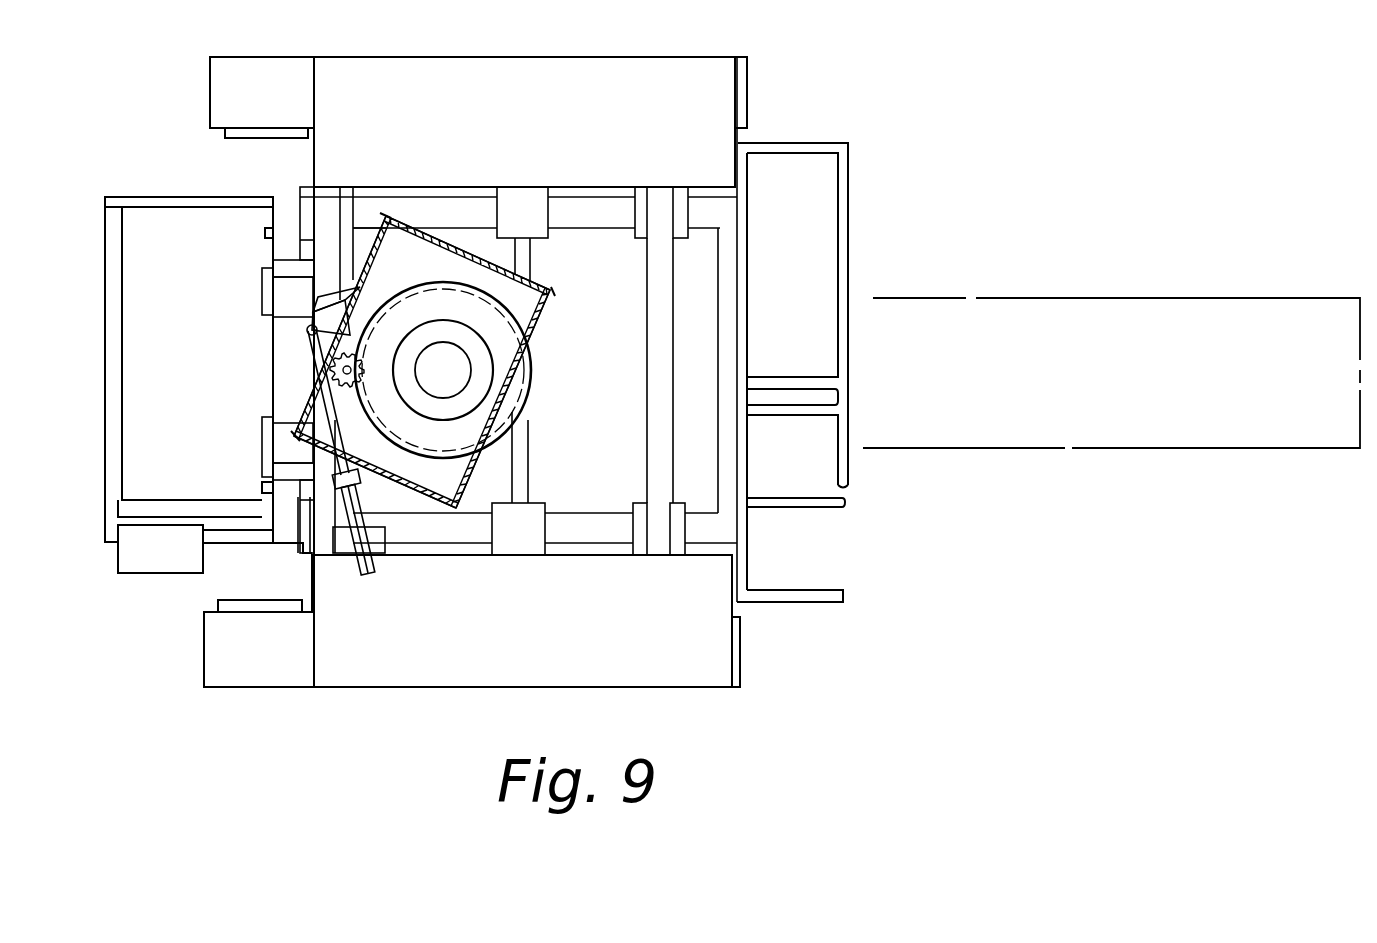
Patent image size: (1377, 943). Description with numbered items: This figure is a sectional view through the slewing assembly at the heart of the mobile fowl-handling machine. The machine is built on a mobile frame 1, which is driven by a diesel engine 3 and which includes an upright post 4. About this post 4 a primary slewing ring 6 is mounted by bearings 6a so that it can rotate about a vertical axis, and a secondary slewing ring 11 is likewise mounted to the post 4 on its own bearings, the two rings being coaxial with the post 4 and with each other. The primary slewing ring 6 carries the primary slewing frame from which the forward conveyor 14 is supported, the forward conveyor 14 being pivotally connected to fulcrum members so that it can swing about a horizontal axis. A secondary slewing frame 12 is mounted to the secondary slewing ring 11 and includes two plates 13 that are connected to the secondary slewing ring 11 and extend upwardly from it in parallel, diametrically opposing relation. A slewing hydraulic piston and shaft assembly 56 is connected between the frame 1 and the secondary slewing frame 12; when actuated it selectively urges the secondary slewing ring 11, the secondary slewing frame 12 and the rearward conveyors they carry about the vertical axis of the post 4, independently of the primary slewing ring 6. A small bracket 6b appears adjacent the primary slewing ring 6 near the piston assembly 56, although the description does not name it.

The mobile frame 1 is at (710, 695).
The diesel engine 3 is at (97, 380).
The post 4 is at (443, 340).
The primary slewing ring 6 is at (540, 374).
The bearings 6a is at (348, 398).
The pivot bracket 6b is at (347, 312).
The secondary slewing ring 11 is at (493, 350).
The secondary slewing frame 12 is at (553, 311).
The plates 13 is at (551, 292).
The forward conveyor 14 is at (1098, 296).
The slewing hydraulic piston and shaft assembly 56 is at (372, 566).